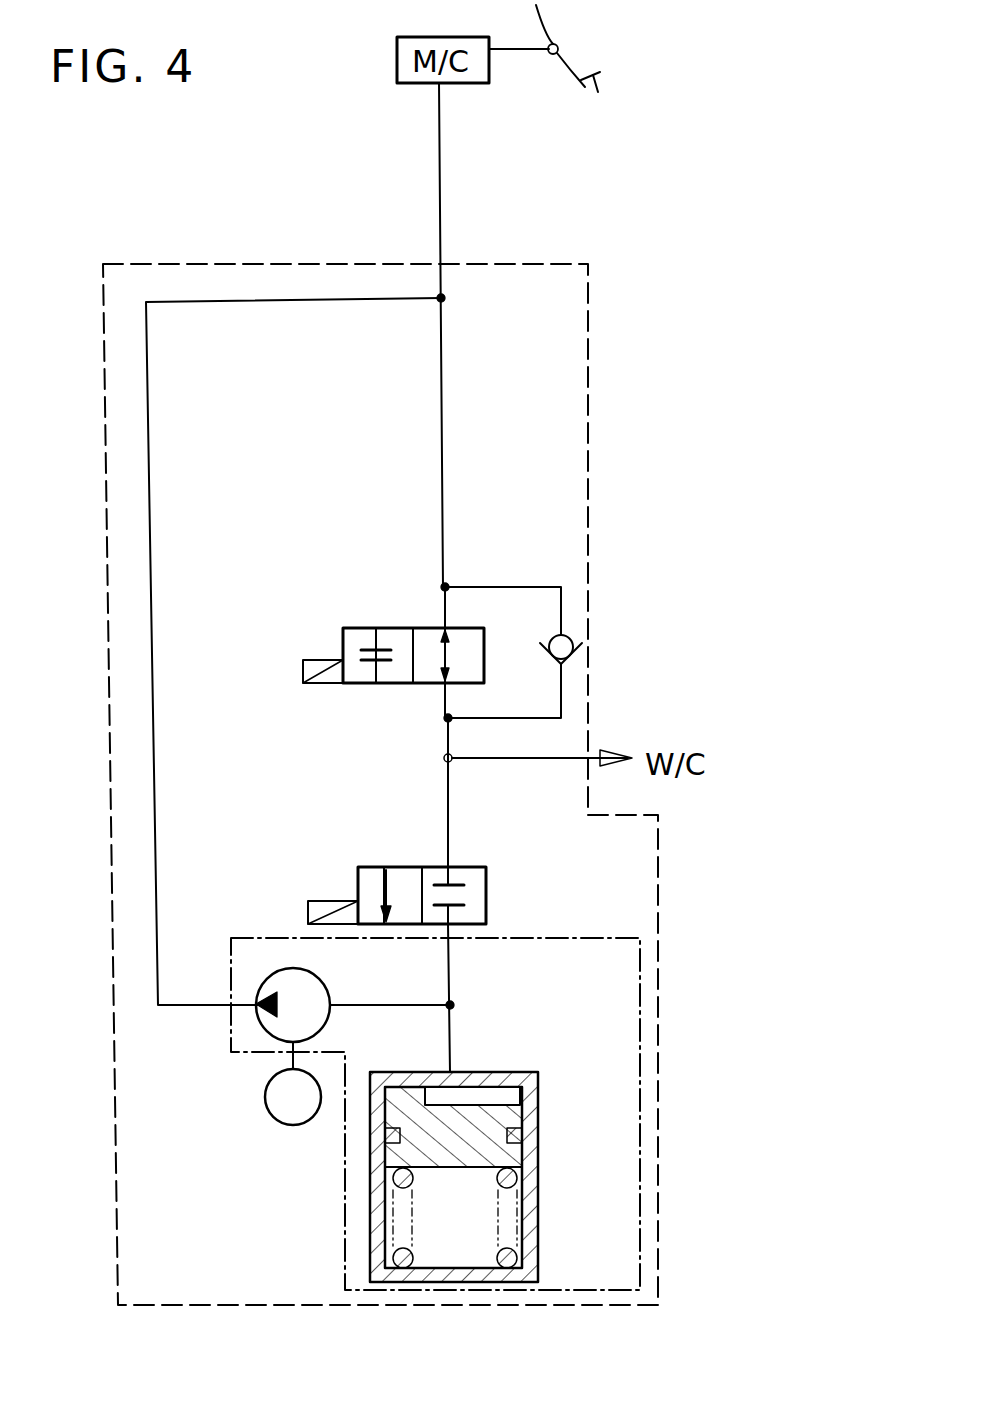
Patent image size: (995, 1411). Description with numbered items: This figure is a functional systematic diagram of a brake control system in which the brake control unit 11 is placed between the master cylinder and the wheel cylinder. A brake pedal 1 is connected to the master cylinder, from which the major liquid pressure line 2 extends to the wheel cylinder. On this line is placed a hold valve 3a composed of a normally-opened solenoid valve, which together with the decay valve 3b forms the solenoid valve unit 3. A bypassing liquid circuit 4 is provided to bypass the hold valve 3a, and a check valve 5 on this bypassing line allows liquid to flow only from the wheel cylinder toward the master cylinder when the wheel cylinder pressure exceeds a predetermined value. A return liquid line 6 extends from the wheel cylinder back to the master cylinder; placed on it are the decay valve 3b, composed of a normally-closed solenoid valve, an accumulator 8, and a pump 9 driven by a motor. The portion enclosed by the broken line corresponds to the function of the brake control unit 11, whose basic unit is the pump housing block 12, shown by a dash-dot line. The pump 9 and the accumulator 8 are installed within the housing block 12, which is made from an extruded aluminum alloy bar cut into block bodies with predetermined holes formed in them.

The brake pedal 1 is at (575, 67).
The major liquid pressure line 2 is at (443, 398).
The solenoid valve unit 3 is at (394, 755).
The hold valve 3a is at (395, 690).
The decay valve 3b is at (400, 867).
The bypassing liquid circuit 4 is at (513, 587).
The check valve 5 is at (566, 642).
The return liquid line 6 is at (158, 795).
The accumulator 8 is at (538, 1083).
The pump 9 is at (327, 988).
The brake control unit 11 is at (660, 861).
The pump housing block 12 is at (608, 930).